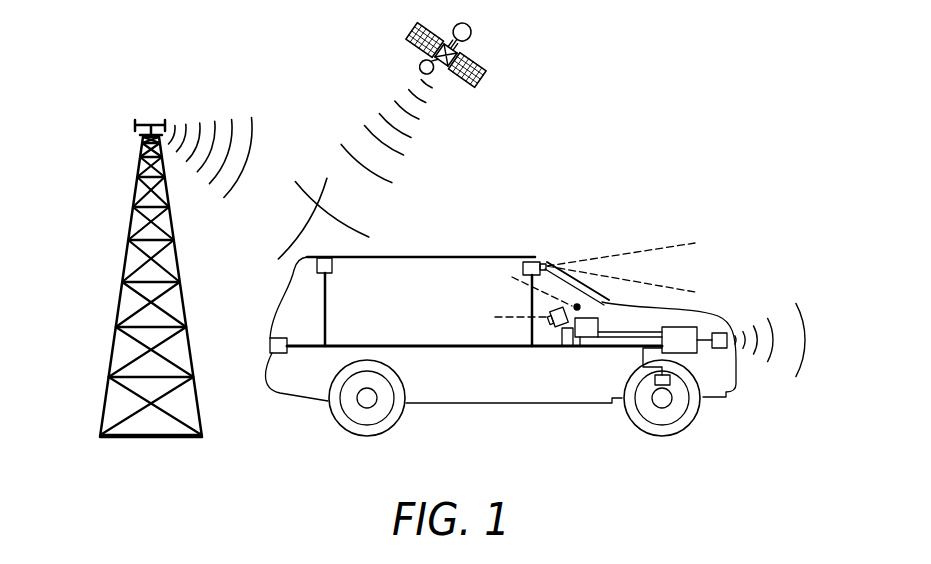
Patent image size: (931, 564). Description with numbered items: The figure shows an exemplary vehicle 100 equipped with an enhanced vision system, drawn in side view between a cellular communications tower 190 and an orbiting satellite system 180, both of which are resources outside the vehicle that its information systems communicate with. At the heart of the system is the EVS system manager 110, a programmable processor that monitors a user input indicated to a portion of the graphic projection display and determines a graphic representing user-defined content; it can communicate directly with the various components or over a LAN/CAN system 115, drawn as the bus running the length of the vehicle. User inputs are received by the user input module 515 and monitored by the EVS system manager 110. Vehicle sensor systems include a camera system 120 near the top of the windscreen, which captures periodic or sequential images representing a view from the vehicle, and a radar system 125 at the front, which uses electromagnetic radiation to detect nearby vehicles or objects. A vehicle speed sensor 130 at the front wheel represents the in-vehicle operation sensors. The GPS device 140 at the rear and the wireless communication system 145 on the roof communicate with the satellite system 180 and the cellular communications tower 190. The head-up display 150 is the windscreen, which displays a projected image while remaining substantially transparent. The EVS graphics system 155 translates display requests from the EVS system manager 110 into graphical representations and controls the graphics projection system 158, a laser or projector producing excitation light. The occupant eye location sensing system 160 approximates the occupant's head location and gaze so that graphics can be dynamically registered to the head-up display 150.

The vehicle 100 is at (467, 256).
The EVS system manager 110 is at (697, 349).
The LAN/CAN system 115 is at (355, 345).
The camera system 120 is at (536, 259).
The radar system 125 is at (727, 338).
The vehicle speed sensor 130 is at (672, 387).
The GPS device 140 is at (270, 346).
The wireless communication system 145 is at (317, 265).
The head-up display (HUD) 150 is at (602, 302).
The EVS graphics system 155 is at (589, 347).
The graphics projection system 158 is at (580, 304).
The occupant eye location sensing system 160 is at (558, 327).
The satellite system 180 is at (424, 63).
The cellular communications tower 190 is at (125, 248).
The user input module (UIM) 515 is at (569, 347).